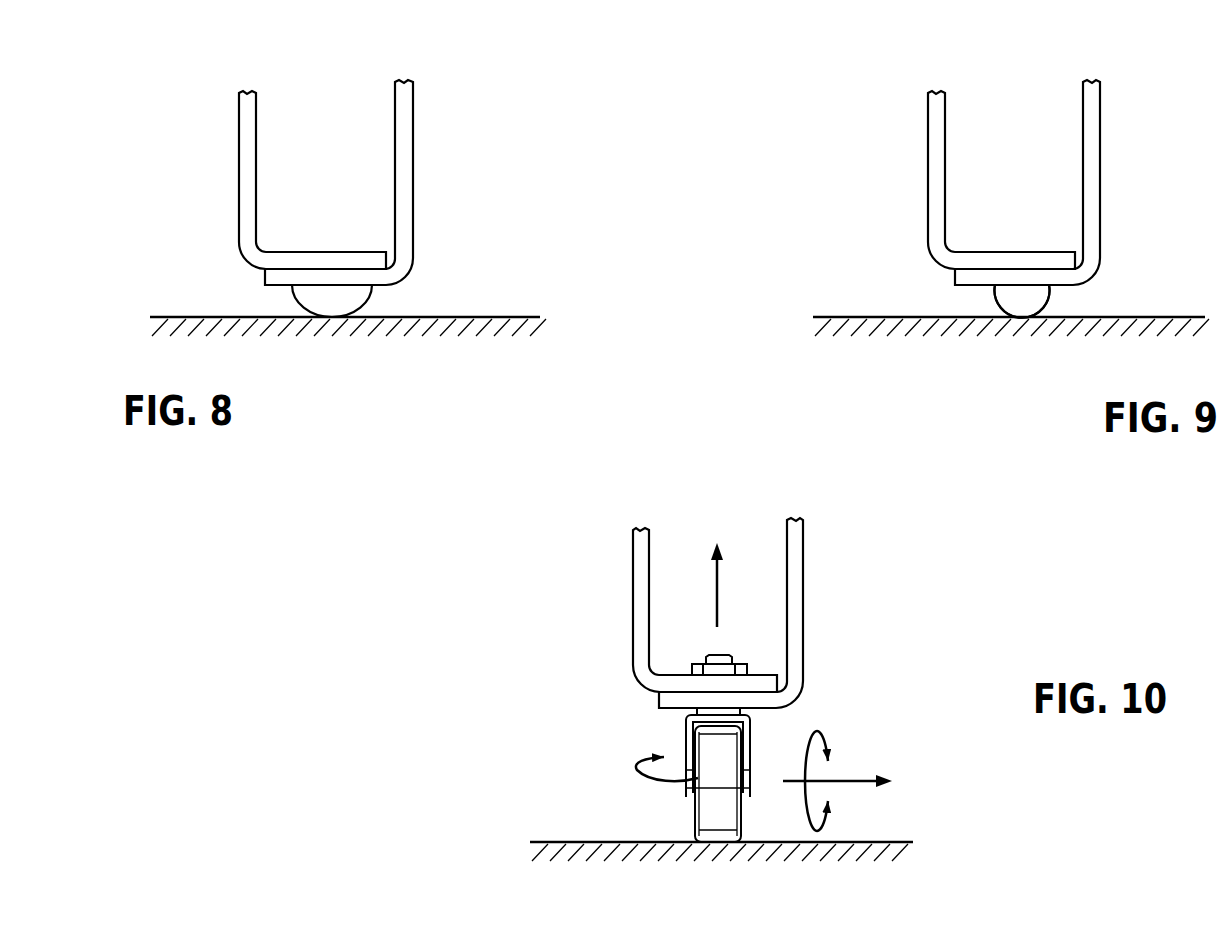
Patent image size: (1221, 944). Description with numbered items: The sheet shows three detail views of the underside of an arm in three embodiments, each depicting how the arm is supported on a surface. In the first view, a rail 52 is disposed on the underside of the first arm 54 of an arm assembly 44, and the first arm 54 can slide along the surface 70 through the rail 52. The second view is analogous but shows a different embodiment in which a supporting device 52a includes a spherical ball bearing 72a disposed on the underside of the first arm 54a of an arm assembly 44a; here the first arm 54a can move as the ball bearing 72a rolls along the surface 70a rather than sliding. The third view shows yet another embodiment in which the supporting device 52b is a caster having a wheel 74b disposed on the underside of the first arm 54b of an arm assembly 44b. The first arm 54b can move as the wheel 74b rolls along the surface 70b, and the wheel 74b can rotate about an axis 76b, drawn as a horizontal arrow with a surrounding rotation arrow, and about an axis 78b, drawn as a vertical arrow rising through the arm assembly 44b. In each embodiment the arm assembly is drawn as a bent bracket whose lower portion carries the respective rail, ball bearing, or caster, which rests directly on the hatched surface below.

In FIG. 8, the arm assembly 44 is at (323, 171).
In FIG. 8, the first arm 54 is at (245, 151).
In FIG. 8, the rail 52 is at (337, 305).
In FIG. 8, the surface 70 is at (485, 317).
In FIG. 9, the arm assembly 44a is at (1022, 152).
In FIG. 9, the first arm 54a is at (937, 162).
In FIG. 9, the supporting device 52a is at (952, 288).
In FIG. 9, the spherical ball bearing 72a is at (1023, 305).
In FIG. 9, the surface 70a is at (1163, 317).
In FIG. 10, the arm assembly 44b is at (729, 580).
In FIG. 10, the first arm 54b is at (636, 578).
In FIG. 10, the supporting device 52b is at (738, 734).
In FIG. 10, the wheel 74b is at (707, 813).
In FIG. 10, the axis 76b is at (860, 781).
In FIG. 10, the axis 78b is at (720, 591).
In FIG. 10, the surface 70b is at (892, 842).